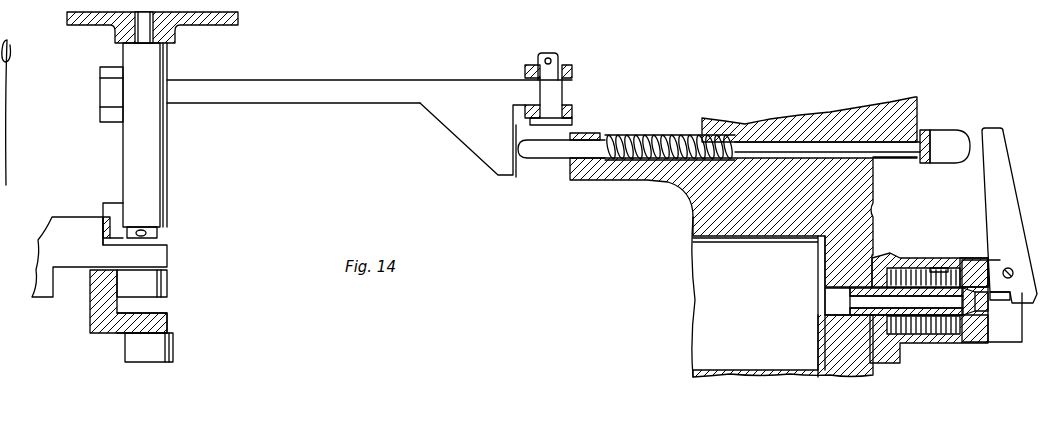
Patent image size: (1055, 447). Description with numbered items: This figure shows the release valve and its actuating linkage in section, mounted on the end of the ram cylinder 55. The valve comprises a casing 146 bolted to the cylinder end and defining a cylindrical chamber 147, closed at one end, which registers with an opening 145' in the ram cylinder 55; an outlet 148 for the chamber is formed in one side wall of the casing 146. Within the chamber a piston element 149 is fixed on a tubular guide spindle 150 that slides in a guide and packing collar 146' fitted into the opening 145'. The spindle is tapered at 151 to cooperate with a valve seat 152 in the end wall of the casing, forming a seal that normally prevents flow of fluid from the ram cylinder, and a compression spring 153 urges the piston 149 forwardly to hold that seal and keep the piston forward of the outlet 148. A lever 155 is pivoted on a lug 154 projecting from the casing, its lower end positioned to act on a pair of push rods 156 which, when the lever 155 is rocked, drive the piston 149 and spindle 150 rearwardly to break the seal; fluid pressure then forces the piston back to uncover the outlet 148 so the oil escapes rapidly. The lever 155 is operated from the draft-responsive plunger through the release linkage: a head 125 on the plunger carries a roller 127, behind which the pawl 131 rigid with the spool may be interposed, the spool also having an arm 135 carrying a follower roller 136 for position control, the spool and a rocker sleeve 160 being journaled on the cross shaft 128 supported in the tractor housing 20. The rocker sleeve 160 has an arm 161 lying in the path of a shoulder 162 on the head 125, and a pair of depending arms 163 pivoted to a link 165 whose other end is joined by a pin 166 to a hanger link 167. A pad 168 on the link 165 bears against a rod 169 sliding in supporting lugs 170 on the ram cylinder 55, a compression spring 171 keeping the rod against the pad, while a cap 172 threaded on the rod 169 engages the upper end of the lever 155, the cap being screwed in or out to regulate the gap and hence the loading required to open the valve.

The tractor housing 20 is at (213, 24).
The ram cylinder 55 is at (796, 373).
The head 125 is at (63, 223).
The roller 127 is at (168, 283).
The cross shaft 128 is at (159, 233).
The pawl 131 is at (98, 293).
The arm 135 is at (168, 323).
The follower roller 136 is at (173, 348).
The opening 145' is at (813, 299).
The casing 146 is at (930, 254).
The guide and packing collar 146' is at (929, 339).
The cylindrical chamber 147 is at (907, 266).
The outlet 148 is at (935, 268).
The piston element 149 is at (966, 268).
The tubular guide spindle 150 is at (862, 313).
The tapered end 151 is at (972, 303).
The valve seat 152 is at (978, 318).
The compression spring 153 is at (940, 331).
The lug 154 is at (1000, 341).
The lever 155 is at (1016, 221).
The push rods 156 is at (1010, 300).
The rocker sleeve 160 is at (168, 148).
The arm 161 is at (116, 201).
The shoulder 162 is at (105, 215).
The depending arms 163 is at (102, 118).
The link 165 is at (363, 88).
The pin 166 is at (558, 60).
The hanger link 167 is at (573, 71).
The pad 168 is at (480, 149).
The rod 169 is at (548, 156).
The supporting lugs 170 is at (588, 134).
The compression spring 171 is at (656, 140).
The cap 172 is at (952, 138).